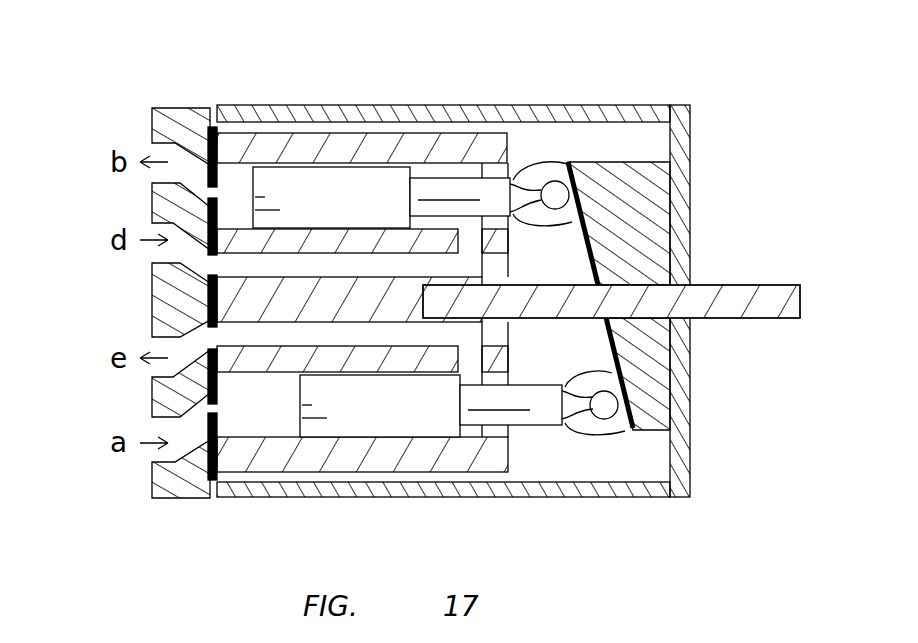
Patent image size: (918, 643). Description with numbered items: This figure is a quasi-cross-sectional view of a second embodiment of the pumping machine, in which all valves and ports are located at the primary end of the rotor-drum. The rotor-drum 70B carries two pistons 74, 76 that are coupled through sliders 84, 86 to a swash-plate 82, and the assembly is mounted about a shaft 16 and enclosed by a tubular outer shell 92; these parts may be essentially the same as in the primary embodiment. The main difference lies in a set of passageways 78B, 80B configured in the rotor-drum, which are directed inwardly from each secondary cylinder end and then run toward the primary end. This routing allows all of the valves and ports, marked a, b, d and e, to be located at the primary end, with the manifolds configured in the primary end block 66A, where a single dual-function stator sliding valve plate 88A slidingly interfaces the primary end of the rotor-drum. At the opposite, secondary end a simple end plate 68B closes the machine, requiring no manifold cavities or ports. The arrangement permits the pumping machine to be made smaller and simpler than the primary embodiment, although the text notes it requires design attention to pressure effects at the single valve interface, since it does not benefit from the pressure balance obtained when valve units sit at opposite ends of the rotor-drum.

The shaft 16 is at (760, 290).
The primary end block 66A is at (129, 329).
The end wall 68B is at (673, 398).
The housing 70B is at (512, 83).
The piston 74 is at (353, 205).
The piston 76 is at (398, 415).
The passageway 78B is at (238, 263).
The passageway 80B is at (238, 331).
The swash-plate 82 is at (650, 241).
The slider 84 is at (570, 222).
The slider 86 is at (608, 377).
The dual-function stator sliding valve plate 88A is at (152, 112).
The tubular outer shell 92 is at (452, 487).